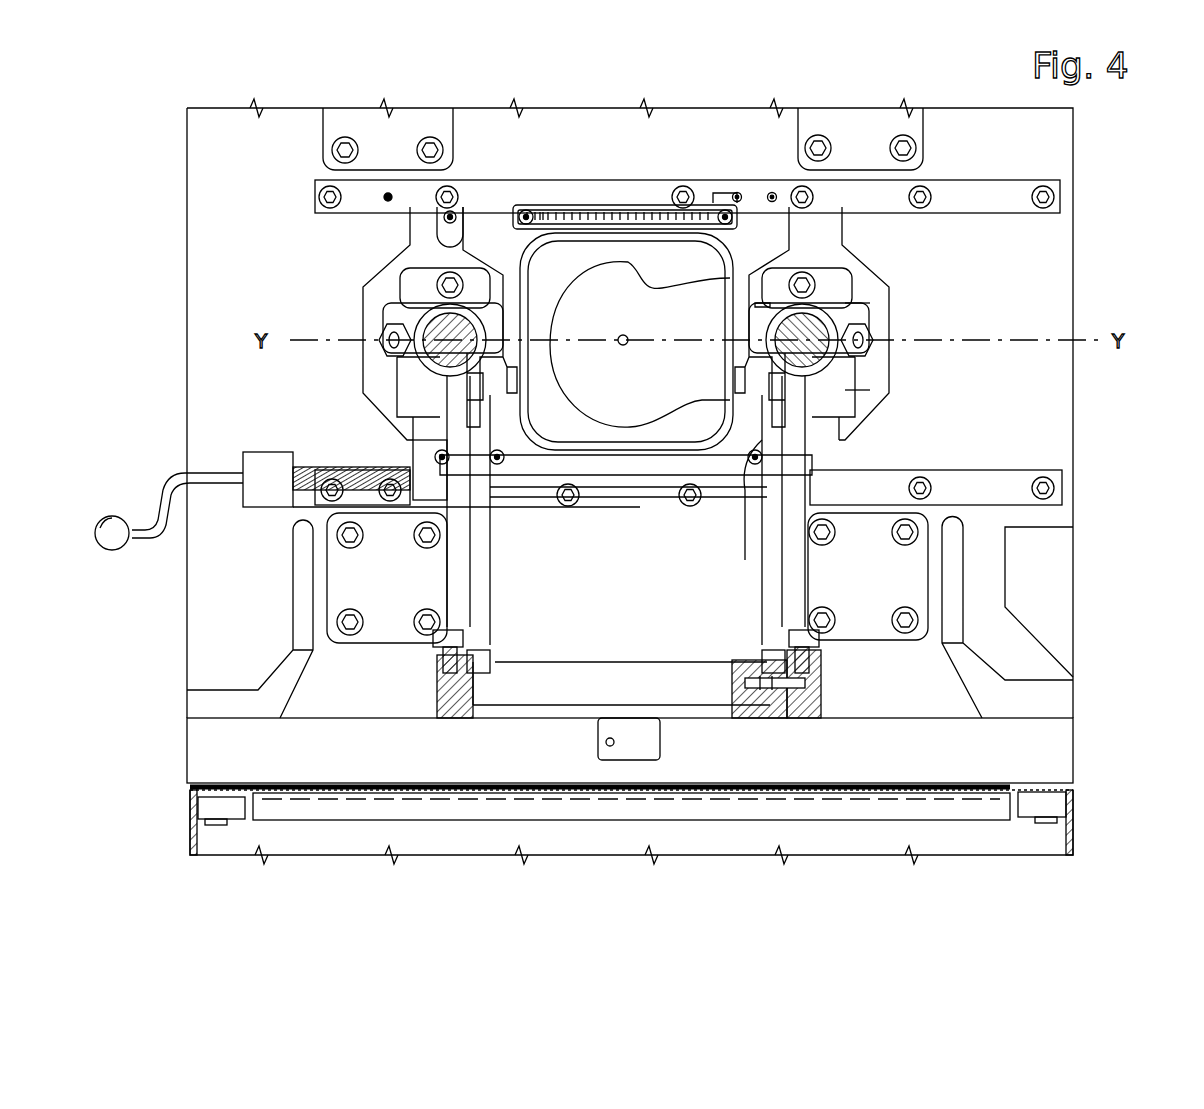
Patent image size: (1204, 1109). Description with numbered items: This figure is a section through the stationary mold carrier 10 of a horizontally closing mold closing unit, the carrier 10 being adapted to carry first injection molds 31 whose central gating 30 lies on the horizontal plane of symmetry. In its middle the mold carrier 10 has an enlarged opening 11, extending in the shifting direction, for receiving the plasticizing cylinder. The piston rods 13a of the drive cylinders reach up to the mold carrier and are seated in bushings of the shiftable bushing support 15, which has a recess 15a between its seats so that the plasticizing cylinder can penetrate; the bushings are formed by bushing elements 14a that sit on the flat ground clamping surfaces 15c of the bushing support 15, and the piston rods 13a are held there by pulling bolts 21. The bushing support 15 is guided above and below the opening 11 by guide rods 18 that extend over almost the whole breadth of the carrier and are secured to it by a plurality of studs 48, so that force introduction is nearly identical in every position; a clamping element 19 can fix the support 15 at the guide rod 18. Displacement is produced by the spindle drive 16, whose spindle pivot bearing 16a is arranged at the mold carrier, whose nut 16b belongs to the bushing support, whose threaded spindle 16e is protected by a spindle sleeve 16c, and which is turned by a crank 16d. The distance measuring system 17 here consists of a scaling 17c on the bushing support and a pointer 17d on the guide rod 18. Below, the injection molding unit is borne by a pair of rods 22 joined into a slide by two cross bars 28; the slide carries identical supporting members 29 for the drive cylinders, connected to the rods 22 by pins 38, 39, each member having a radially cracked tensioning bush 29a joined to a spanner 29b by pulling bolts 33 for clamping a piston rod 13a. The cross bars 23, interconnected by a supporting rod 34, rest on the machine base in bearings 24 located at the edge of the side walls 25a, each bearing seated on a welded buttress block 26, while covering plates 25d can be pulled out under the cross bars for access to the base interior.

The stationary mold carrier 10 is at (252, 283).
The opening 11 is at (580, 330).
The piston rods 13a is at (425, 352).
The bushing elements 14a is at (838, 287).
The bushing support 15 is at (493, 215).
The recess 15a is at (730, 318).
The clamping surfaces 15c is at (382, 296).
The spindle drive 16 is at (334, 457).
The spindle pivot bearing 16a is at (265, 507).
The nut 16b is at (433, 487).
The spindle sleeve 16c is at (707, 488).
The crank 16d is at (117, 550).
The threaded spindle 16e is at (375, 500).
The distance measuring system 17 is at (653, 199).
The scaling 17c is at (592, 210).
The pointer 17d is at (718, 205).
The guide rod 18 is at (1000, 205).
The clamping element 19 is at (455, 217).
The pulling bolts 21 is at (863, 350).
The pair of rods 22 is at (432, 692).
The cross bars 23 is at (915, 765).
The bearing 24 is at (189, 794).
The side walls 25a is at (1078, 822).
The covering plates 25d is at (535, 798).
The buttress block 26 is at (228, 805).
The cross bars 28 is at (630, 690).
The supporting members 29 is at (850, 425).
The tensioning bushes 29a is at (862, 302).
The spanner 29b is at (852, 392).
The central gating 30 is at (623, 348).
The first injection molds 31 is at (658, 375).
The pulling bolts 33 is at (765, 300).
The supporting rod 34 is at (675, 746).
The pin 38 is at (475, 658).
The pin 39 is at (470, 628).
The studs 48 is at (925, 192).